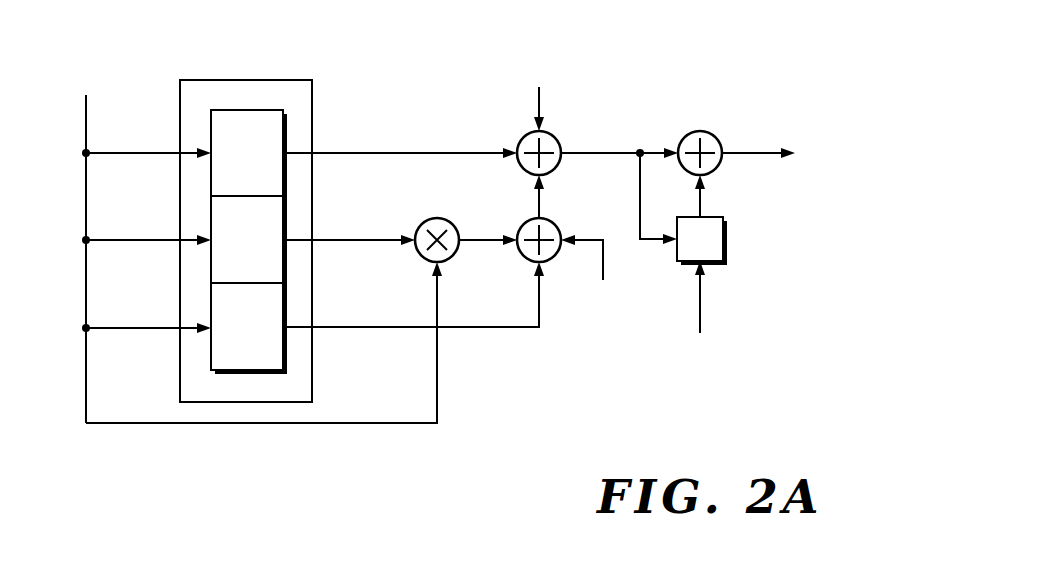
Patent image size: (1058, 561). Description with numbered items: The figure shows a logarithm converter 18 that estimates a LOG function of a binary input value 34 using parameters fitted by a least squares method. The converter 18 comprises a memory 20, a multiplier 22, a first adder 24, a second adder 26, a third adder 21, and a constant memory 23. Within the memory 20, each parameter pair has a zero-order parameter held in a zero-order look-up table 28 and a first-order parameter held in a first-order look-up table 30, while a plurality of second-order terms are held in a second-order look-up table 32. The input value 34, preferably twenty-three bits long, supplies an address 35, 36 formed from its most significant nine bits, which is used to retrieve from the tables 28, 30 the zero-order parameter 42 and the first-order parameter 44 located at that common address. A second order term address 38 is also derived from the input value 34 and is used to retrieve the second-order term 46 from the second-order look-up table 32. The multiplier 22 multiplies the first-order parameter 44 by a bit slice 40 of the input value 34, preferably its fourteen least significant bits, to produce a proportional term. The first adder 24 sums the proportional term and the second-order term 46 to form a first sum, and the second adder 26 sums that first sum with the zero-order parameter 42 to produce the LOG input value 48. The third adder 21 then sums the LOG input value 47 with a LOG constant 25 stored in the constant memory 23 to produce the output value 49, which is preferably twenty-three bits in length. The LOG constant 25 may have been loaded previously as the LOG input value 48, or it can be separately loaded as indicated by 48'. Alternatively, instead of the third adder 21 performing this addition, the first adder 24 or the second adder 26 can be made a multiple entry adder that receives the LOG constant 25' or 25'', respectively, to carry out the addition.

The logarithm converter 18 is at (620, 362).
The memory 20 is at (224, 80).
The third adder 21 is at (686, 137).
The multiplier 22 is at (420, 259).
The constant memory 23 is at (727, 244).
The first adder 24 is at (527, 259).
The LOG constant 25 is at (725, 196).
The LOG constant 25' is at (611, 267).
The LOG constant 25'' is at (512, 102).
The second adder 26 is at (523, 171).
The zero-order look-up table 28 is at (249, 153).
The first-order look-up table 30 is at (249, 239).
The second-order look-up table 32 is at (249, 328).
The input value 34 is at (86, 118).
The address 35 is at (130, 152).
The address 36 is at (132, 239).
The second order term address 38 is at (132, 327).
The bit slice 40 is at (437, 369).
The zero-order parameter 42 is at (347, 151).
The first-order parameter 44 is at (347, 238).
The second-order term 46 is at (346, 327).
The LOG input value 47 is at (604, 151).
The LOG input value 48 is at (633, 198).
The separate load 48' is at (725, 297).
The output value 49 is at (750, 151).